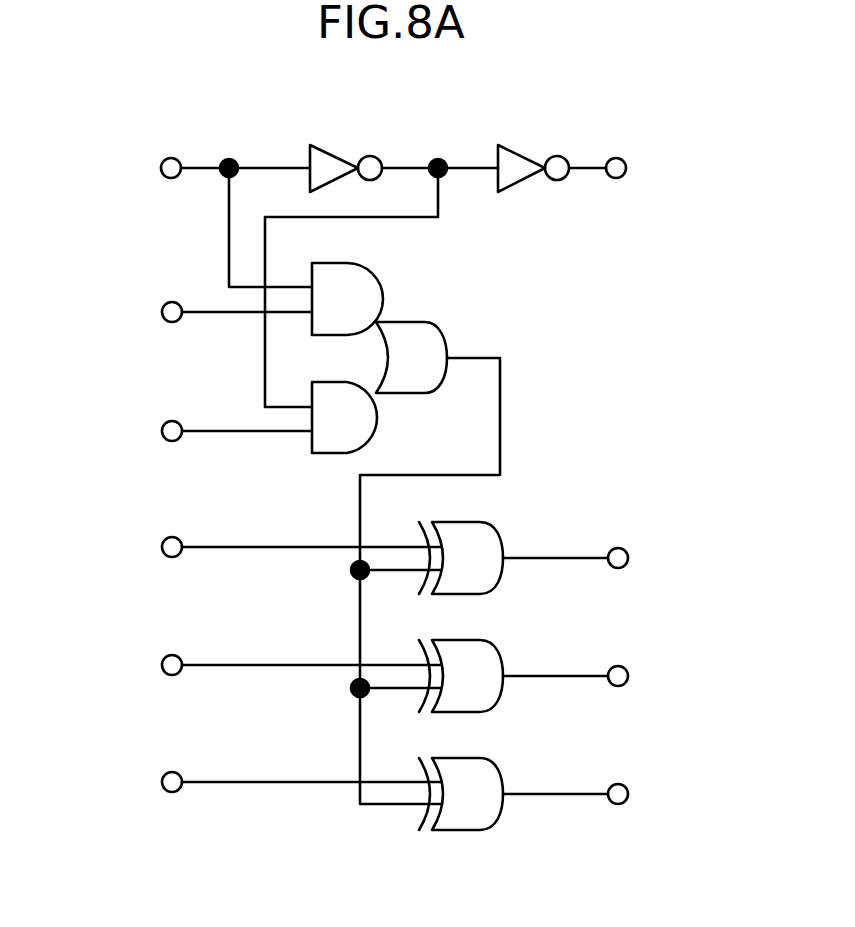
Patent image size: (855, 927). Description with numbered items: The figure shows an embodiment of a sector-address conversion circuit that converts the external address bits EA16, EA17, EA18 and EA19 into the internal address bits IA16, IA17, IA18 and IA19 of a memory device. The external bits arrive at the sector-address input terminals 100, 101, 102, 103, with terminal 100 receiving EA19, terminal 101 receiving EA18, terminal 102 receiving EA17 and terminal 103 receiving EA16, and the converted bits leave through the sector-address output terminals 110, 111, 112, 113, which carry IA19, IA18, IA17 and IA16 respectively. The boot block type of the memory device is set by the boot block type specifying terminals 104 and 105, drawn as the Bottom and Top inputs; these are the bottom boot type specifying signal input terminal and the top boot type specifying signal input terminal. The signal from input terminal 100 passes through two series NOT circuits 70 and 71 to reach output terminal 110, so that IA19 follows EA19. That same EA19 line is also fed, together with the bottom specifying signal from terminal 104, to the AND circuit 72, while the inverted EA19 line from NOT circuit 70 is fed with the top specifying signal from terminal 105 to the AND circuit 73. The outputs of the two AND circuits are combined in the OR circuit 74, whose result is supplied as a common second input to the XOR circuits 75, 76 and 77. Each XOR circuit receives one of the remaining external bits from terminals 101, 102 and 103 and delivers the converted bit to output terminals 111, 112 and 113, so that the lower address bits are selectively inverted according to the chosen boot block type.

The sector-address input terminal 100 is at (170, 158).
The sector-address input terminal 101 is at (172, 558).
The sector-address input terminal 102 is at (172, 676).
The sector-address input terminal 103 is at (172, 793).
The boot block type specifying terminal 104 is at (172, 323).
The boot block type specifying terminal 105 is at (172, 442).
The sector-address output terminal 110 is at (616, 179).
The sector-address output terminal 111 is at (618, 569).
The sector-address output terminal 112 is at (618, 687).
The sector-address output terminal 113 is at (618, 805).
The NOT circuit 70 is at (337, 152).
The NOT circuit 71 is at (525, 150).
The AND circuit 72 is at (380, 273).
The AND circuit 73 is at (380, 435).
The OR circuit 74 is at (442, 330).
The XOR circuit 75 is at (492, 525).
The XOR circuit 76 is at (492, 643).
The XOR circuit 77 is at (493, 760).